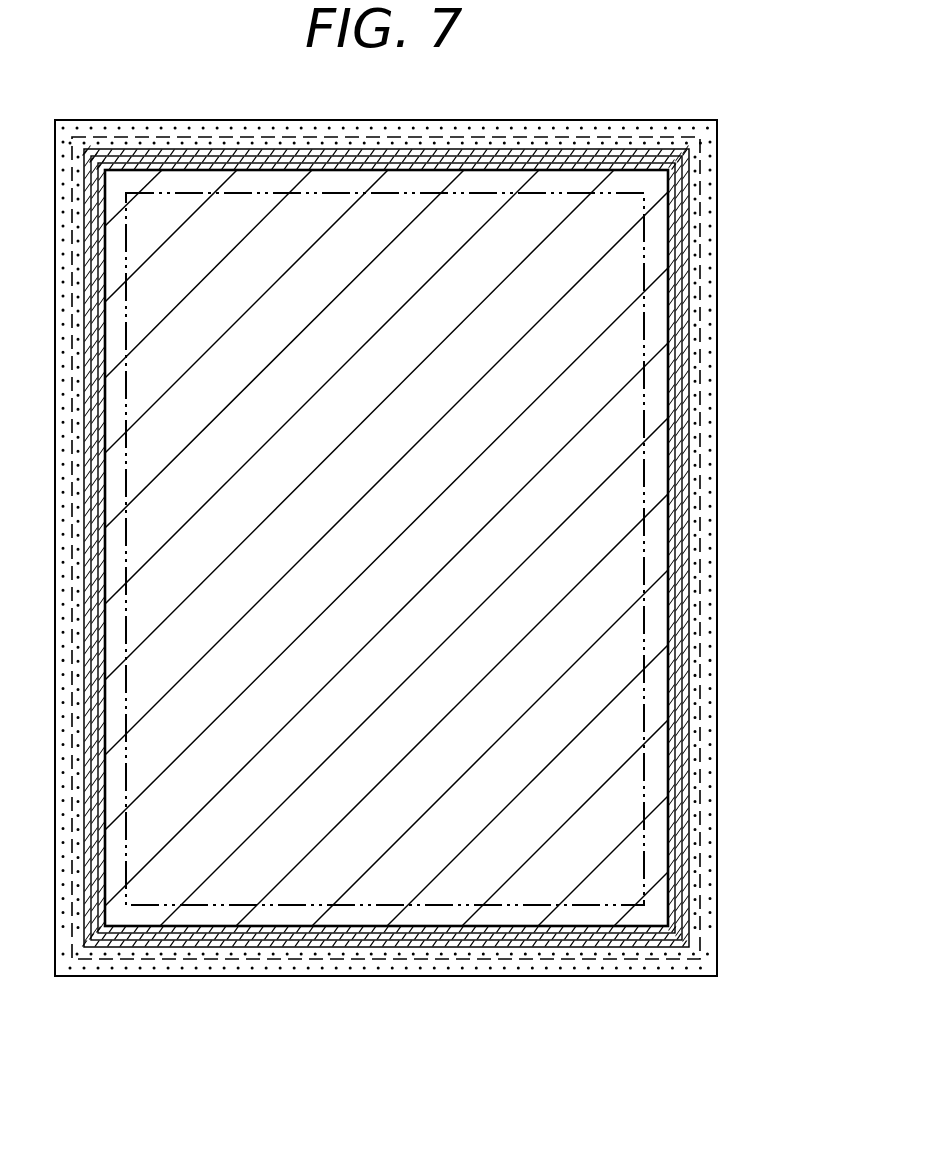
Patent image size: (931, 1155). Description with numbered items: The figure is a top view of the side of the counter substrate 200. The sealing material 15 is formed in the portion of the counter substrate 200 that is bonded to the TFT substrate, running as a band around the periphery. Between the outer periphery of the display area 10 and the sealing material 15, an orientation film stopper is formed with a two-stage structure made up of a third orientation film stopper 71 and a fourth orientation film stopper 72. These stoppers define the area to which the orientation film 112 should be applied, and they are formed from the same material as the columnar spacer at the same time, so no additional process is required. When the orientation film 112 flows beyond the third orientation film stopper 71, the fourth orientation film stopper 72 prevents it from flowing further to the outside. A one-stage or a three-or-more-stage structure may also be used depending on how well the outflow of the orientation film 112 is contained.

The display area 10 is at (648, 243).
The third orientation film stopper 71 is at (668, 302).
The fourth orientation film stopper 72 is at (688, 376).
The orientation film 112 is at (655, 461).
The sealing material 15 is at (703, 552).
The counter substrate 200 is at (717, 641).